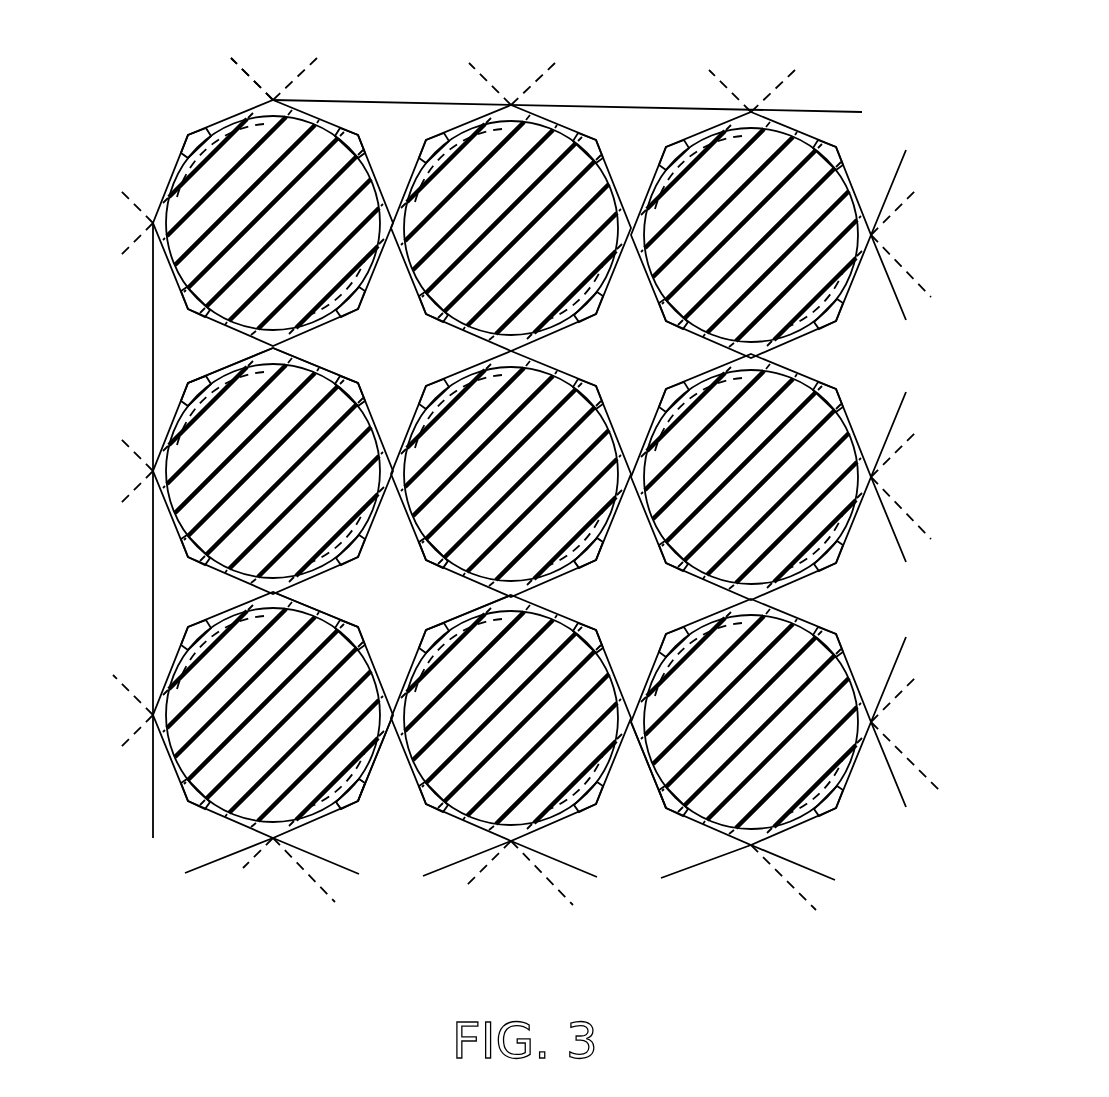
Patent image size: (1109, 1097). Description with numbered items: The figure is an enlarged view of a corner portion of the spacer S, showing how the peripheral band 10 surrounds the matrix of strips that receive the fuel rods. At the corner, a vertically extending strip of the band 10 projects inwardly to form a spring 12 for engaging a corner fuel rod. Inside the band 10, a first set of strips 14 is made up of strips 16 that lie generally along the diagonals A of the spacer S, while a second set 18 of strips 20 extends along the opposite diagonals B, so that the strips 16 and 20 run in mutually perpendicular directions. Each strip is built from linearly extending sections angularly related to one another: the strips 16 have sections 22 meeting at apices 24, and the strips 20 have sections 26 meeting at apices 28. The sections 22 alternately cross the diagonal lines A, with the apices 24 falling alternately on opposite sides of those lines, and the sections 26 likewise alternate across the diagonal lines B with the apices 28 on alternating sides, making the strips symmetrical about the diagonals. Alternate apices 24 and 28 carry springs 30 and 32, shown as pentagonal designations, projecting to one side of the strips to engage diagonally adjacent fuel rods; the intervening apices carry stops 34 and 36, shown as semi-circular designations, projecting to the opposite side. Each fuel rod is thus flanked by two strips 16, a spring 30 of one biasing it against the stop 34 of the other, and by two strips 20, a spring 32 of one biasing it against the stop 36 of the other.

The peripheral band 10 is at (618, 105).
The spring 12 is at (197, 145).
The first set of strips 14 is at (335, 125).
The strips of the first set 16 is at (323, 368).
The second set of strips 18 is at (223, 369).
The strips of the second set 20 is at (473, 608).
The linearly extending sections 22 is at (643, 770).
The apices 24 is at (590, 632).
The linearly extending sections 26 is at (370, 760).
The apices 28 is at (353, 802).
The springs 30 is at (358, 390).
The springs 32 is at (192, 397).
The stops 34 is at (428, 553).
The stops 36 is at (587, 558).
The diagonal lines A is at (263, 89).
The diagonal lines B is at (793, 78).
The spacer S is at (388, 100).